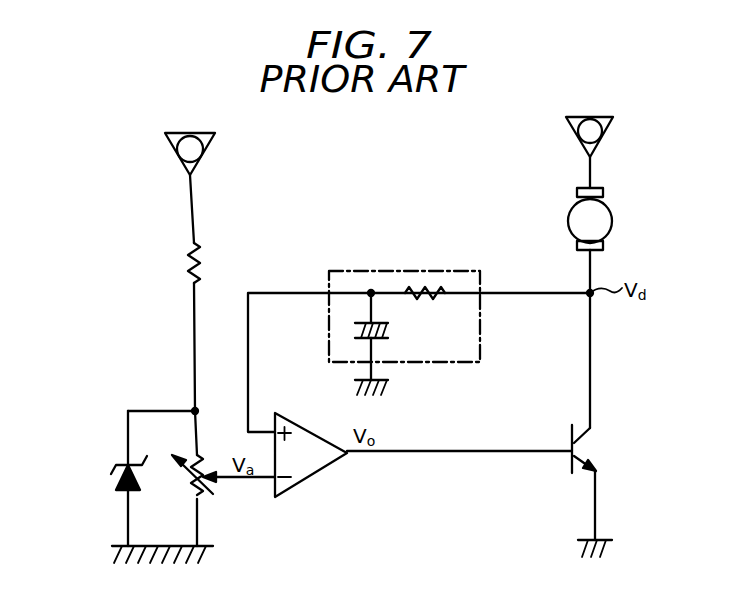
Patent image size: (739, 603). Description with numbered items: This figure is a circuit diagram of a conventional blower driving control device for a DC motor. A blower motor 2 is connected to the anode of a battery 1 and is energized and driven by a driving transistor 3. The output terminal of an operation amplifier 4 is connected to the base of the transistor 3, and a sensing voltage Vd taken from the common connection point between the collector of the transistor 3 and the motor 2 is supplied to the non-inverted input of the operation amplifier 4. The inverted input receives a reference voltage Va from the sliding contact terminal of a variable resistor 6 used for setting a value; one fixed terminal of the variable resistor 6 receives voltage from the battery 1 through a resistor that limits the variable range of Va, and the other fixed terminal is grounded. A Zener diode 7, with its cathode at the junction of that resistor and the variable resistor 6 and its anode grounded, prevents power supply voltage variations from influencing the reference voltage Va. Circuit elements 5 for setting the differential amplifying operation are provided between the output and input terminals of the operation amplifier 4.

The battery 1 is at (205, 143).
The blower motor 2 is at (612, 218).
The driving transistor 3 is at (587, 447).
The operation amplifier 4 is at (318, 474).
The feedback network 5 is at (481, 318).
The variable resistor 6 is at (202, 468).
The Zener diode 7 is at (116, 486).